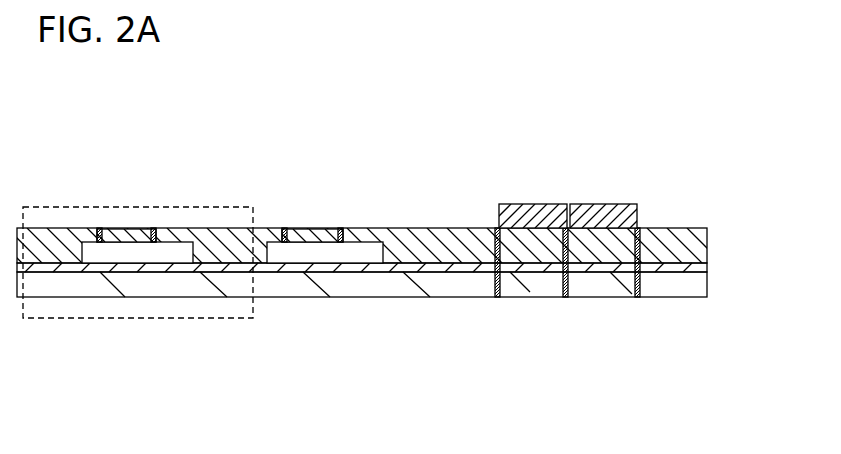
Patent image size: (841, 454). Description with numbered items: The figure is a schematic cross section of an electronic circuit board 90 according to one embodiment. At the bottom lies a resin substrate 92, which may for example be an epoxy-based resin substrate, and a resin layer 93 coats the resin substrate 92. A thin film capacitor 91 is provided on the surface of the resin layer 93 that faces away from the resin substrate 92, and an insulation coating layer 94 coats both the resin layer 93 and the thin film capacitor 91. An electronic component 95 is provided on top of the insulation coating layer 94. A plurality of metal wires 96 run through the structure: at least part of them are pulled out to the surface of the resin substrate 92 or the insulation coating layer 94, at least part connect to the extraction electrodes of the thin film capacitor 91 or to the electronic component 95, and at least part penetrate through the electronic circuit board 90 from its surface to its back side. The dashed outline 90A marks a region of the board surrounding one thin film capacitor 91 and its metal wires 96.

The electronic circuit board 90 is at (632, 131).
The region of electronic device 90A is at (224, 206).
The thin film capacitor 91 is at (155, 255).
The resin substrate 92 is at (700, 288).
The resin layer 93 is at (700, 267).
The insulation coating layer 94 is at (698, 248).
The electronic component 95 is at (582, 204).
The metal wires 96 is at (153, 228).